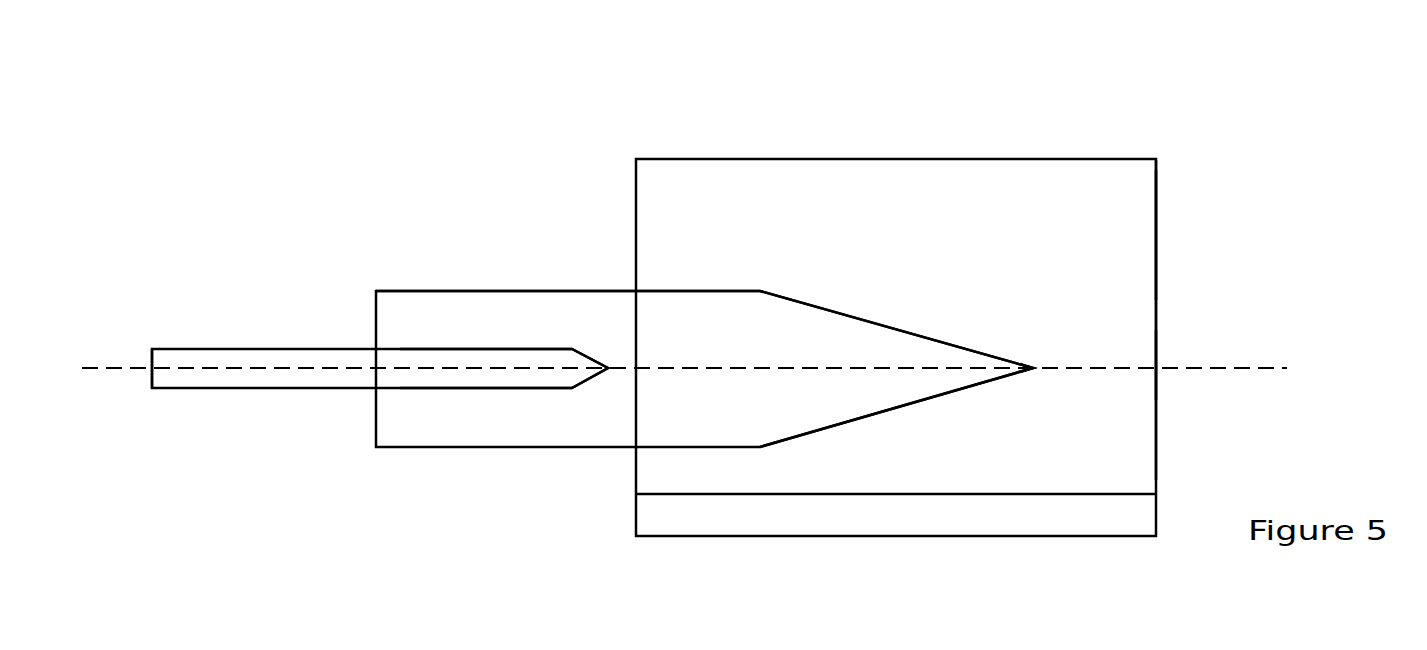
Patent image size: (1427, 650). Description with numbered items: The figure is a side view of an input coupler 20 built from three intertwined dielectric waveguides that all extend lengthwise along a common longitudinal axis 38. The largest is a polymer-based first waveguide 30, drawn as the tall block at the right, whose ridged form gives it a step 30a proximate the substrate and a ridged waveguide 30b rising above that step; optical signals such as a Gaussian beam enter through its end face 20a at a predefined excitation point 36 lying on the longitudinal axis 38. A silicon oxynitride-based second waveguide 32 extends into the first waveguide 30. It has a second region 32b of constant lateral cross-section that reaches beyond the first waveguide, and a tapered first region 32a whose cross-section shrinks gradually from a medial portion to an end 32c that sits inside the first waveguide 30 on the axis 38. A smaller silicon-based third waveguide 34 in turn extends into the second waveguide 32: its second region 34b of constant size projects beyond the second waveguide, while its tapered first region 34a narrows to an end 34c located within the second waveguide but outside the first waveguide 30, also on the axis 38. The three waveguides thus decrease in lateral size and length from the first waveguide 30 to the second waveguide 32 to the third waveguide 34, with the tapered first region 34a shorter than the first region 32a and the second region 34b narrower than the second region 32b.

The input coupler 20 is at (868, 90).
The end face of housing 20a is at (1158, 222).
The first waveguide 30 is at (1003, 159).
The step 30a is at (1132, 513).
The ridged waveguide 30b is at (1132, 452).
The second waveguide 32 is at (572, 425).
The first region of the second waveguide 32a is at (823, 328).
The second region of the second waveguide 32b is at (478, 316).
The end of the second waveguide 32c is at (1035, 350).
The third waveguide 34 is at (318, 380).
The first region of the third waveguide 34a is at (475, 372).
The second region of the third waveguide 34b is at (213, 390).
The end of the third waveguide 34c is at (607, 368).
The predefined excitation point 36 is at (1160, 350).
The longitudinal axis 38 is at (1235, 350).